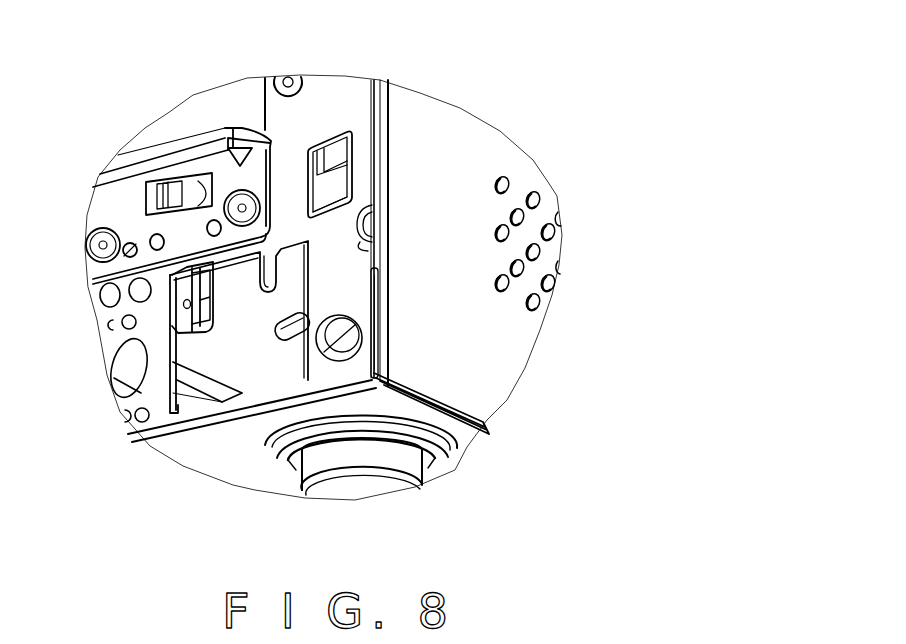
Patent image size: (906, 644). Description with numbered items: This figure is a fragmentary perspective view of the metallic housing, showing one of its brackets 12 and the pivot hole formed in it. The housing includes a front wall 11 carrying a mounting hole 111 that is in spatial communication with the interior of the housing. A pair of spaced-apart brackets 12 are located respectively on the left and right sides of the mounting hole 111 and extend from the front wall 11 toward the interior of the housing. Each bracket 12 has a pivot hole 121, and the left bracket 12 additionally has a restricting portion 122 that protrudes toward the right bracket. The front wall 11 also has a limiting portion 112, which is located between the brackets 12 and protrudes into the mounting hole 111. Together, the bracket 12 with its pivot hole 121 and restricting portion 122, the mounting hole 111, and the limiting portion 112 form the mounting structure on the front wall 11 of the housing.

The front wall 11 is at (340, 106).
The mounting hole 111 is at (257, 365).
The limiting portion 112 is at (236, 276).
The bracket 12 is at (195, 318).
The pivot hole 121 is at (184, 303).
The restricting portion 122 is at (203, 317).